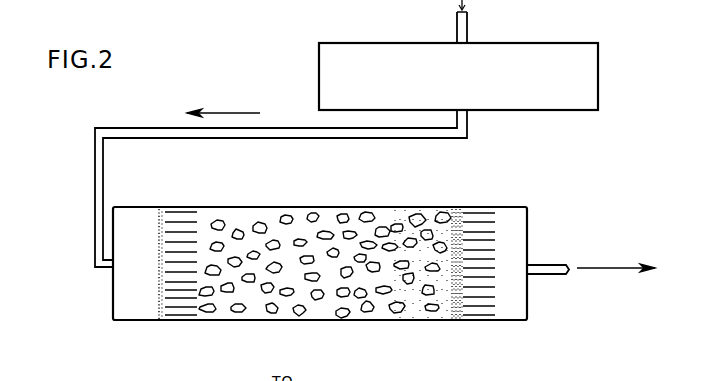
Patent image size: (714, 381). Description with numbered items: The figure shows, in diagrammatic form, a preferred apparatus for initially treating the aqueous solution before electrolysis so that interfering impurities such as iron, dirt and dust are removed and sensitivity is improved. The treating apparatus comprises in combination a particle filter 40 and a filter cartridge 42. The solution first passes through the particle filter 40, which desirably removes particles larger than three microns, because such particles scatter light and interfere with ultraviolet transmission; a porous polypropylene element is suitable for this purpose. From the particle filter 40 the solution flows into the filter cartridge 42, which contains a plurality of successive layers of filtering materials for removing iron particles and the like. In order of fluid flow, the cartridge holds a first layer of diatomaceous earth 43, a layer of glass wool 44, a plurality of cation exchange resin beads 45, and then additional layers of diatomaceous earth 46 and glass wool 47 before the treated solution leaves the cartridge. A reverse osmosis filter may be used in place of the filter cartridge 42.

The particle filter 40 is at (598, 100).
The filter cartridge 42 is at (413, 333).
The first layer of diatomaceous earth 43 is at (157, 322).
The layer of glass wool 44 is at (188, 317).
The cation exchange resin beads 45 is at (288, 317).
The additional layer of diatomaceous earth 46 is at (457, 322).
The additional layer of glass wool 47 is at (487, 317).